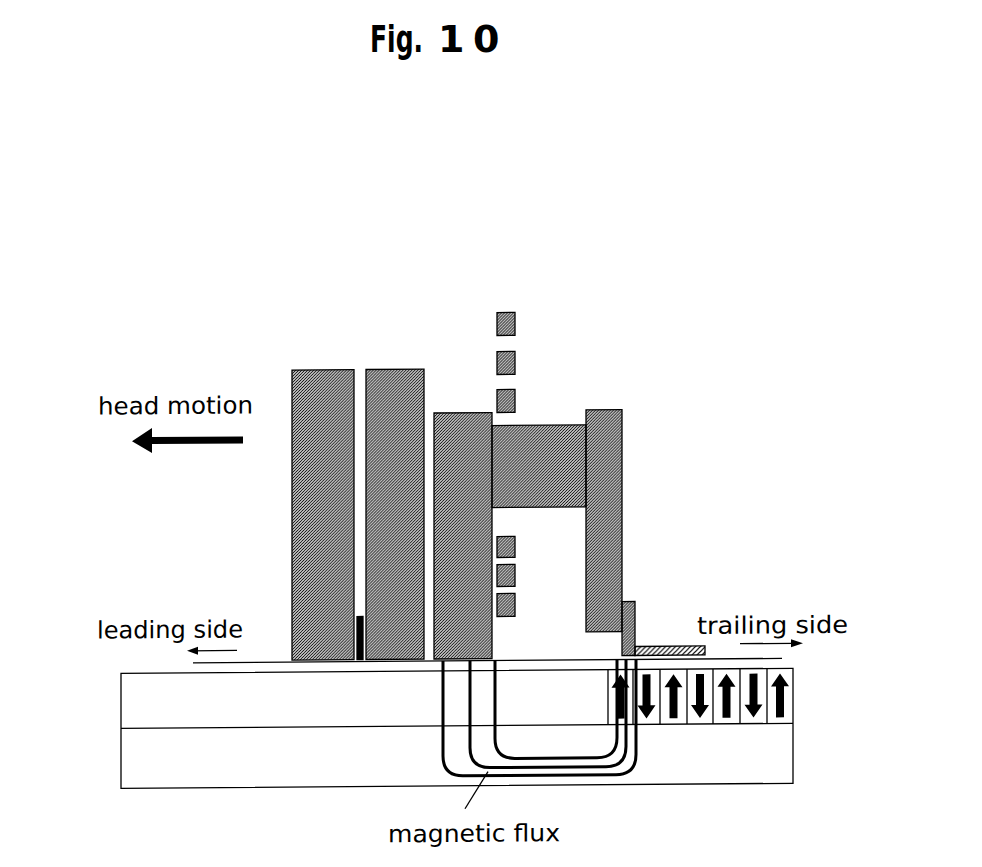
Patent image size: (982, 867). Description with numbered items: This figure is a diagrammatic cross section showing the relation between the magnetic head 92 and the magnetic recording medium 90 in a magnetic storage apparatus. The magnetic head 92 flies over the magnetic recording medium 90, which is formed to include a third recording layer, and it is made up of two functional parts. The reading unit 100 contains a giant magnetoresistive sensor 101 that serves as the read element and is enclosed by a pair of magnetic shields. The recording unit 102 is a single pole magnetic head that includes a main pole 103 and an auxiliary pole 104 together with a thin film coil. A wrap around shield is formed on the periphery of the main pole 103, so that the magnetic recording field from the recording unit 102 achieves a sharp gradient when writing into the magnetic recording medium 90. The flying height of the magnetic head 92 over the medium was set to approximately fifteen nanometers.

The magnetic recording medium 90 is at (95, 672).
The magnetic head 92 is at (628, 249).
The reading unit 100 is at (418, 301).
The giant magnetoresistive sensor 101 is at (355, 630).
The recording unit 102 is at (617, 301).
The main pole 103 is at (637, 604).
The auxiliary pole 104 is at (652, 643).